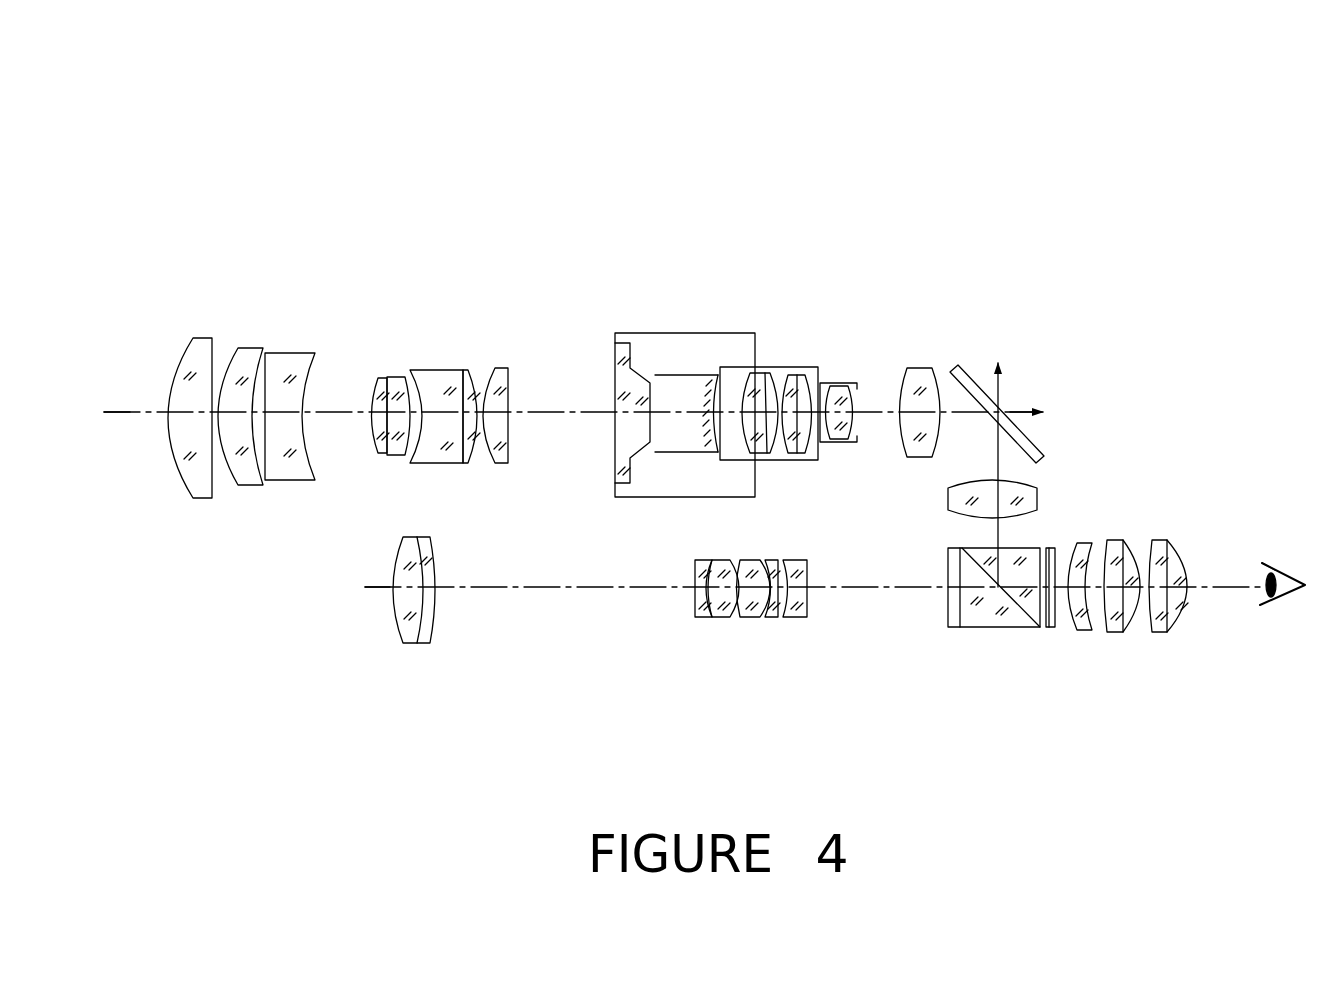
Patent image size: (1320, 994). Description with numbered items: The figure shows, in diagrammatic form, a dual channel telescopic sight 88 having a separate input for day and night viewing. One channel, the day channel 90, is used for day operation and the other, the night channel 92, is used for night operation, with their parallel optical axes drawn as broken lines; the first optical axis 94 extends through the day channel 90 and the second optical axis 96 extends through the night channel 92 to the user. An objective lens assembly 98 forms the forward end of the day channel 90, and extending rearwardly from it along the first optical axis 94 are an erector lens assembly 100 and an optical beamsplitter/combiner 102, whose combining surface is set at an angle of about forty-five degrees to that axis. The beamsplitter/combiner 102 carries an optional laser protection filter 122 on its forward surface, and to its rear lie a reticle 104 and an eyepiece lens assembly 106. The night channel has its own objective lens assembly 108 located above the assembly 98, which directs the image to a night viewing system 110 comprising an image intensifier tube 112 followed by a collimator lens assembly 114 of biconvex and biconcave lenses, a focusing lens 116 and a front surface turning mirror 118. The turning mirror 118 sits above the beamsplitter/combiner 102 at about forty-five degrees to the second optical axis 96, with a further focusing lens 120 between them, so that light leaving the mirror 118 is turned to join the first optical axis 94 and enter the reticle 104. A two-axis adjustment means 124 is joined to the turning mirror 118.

The sight 88 is at (536, 158).
The day channel 90 is at (568, 675).
The night channel 92 is at (555, 393).
The first optical axis 94 is at (363, 590).
The second optical axis 96 is at (104, 412).
The objective lens assembly 98 is at (382, 643).
The erector lens assembly 100 is at (690, 628).
The optical beamsplitter/combiner 102 is at (1008, 628).
The reticle 104 is at (1053, 629).
The eyepiece lens assembly 106 is at (1062, 633).
The objective lens assembly 108 is at (168, 337).
The night viewing system 110 is at (738, 339).
The image intensifier tube 112 is at (757, 318).
The collimator lens assembly 114 is at (788, 386).
The focusing lens 116 is at (922, 367).
The front surface turning mirror 118 is at (963, 367).
The focusing lens 120 is at (1040, 497).
The laser protection filter 122 is at (958, 622).
The two-axis adjustment means 124 is at (1045, 400).